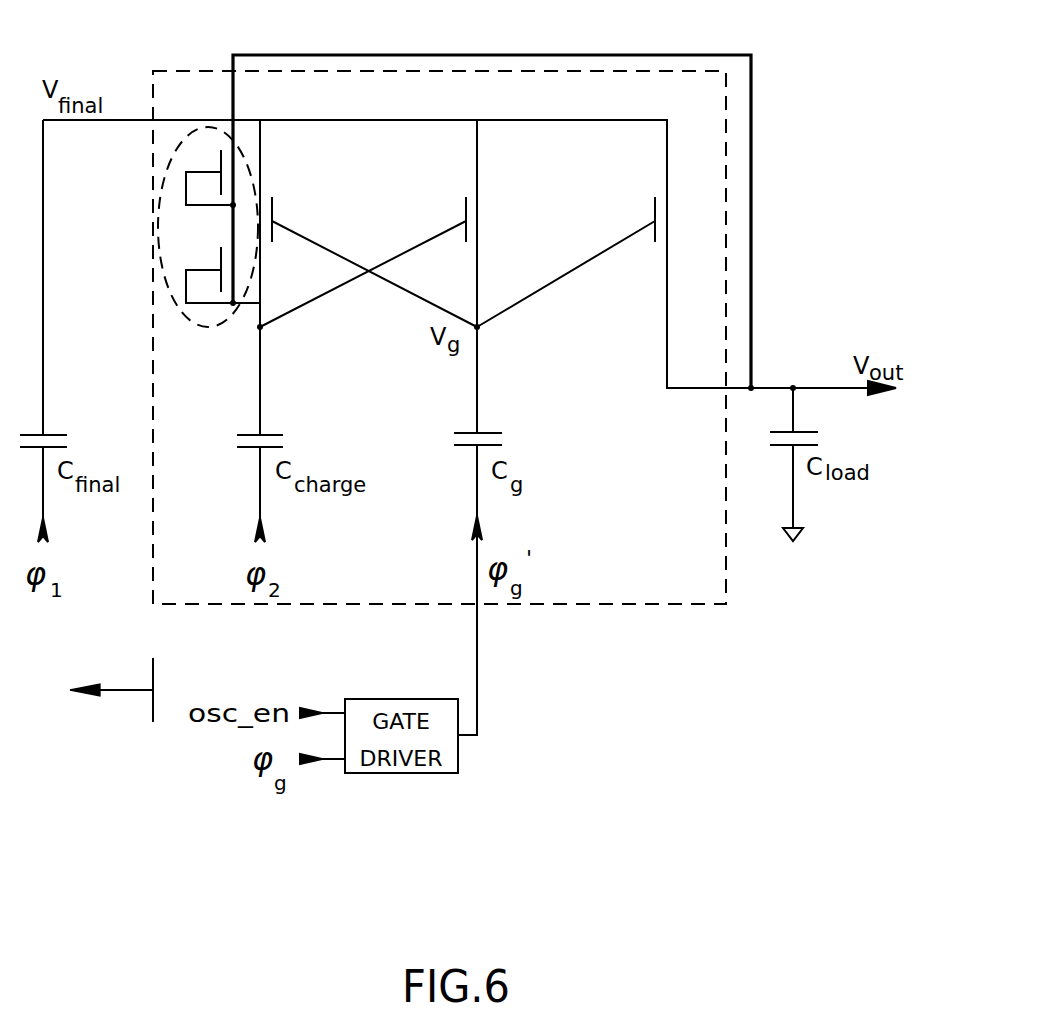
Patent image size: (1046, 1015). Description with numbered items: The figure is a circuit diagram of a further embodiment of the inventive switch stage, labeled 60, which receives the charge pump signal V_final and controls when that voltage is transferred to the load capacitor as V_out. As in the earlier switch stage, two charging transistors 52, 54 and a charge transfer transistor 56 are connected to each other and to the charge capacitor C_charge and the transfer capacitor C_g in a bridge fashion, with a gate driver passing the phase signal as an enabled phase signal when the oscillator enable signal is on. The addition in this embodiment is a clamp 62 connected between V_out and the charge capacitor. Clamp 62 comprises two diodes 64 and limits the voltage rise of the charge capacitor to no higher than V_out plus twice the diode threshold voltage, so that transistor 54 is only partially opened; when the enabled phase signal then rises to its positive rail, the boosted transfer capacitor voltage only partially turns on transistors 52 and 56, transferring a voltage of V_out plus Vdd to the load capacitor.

The charging transistor 52 is at (131, 753).
The charging transistor 54 is at (368, 246).
The charge transfer transistor 56 is at (571, 246).
The switch stage embodiment 60 is at (677, 604).
The clamp 62 is at (172, 160).
The diodes 64 is at (186, 190).